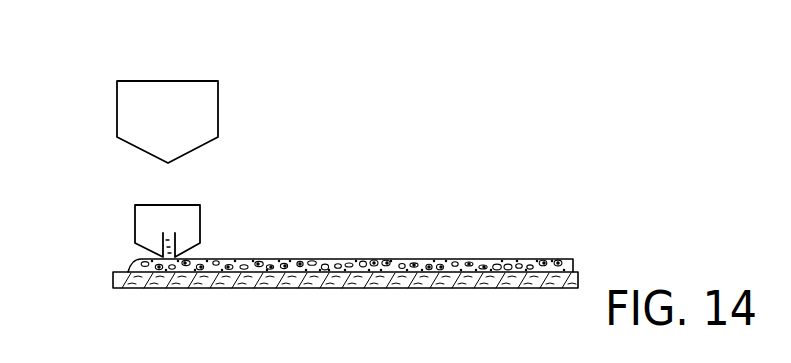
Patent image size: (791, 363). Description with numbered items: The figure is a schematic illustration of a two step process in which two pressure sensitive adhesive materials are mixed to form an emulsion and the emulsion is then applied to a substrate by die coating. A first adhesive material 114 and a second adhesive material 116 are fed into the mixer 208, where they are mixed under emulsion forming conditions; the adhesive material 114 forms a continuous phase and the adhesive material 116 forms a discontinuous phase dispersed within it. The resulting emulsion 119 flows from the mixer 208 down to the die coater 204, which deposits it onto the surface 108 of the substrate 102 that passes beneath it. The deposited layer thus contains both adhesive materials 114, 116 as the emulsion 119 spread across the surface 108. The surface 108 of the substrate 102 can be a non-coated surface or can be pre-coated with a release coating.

The substrate 102 is at (145, 289).
The surface 108 is at (122, 270).
The adhesive material 114 is at (146, 72).
The adhesive material 116 is at (197, 72).
The emulsion 119 is at (168, 163).
The die coater 204 is at (200, 220).
The mixer 208 is at (218, 111).